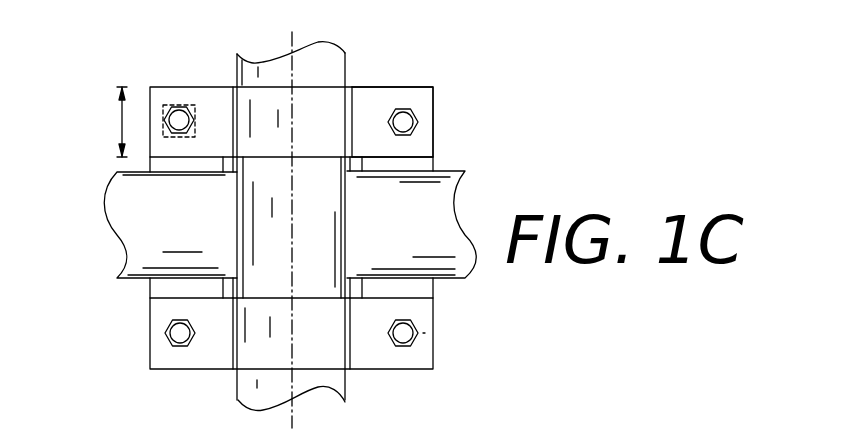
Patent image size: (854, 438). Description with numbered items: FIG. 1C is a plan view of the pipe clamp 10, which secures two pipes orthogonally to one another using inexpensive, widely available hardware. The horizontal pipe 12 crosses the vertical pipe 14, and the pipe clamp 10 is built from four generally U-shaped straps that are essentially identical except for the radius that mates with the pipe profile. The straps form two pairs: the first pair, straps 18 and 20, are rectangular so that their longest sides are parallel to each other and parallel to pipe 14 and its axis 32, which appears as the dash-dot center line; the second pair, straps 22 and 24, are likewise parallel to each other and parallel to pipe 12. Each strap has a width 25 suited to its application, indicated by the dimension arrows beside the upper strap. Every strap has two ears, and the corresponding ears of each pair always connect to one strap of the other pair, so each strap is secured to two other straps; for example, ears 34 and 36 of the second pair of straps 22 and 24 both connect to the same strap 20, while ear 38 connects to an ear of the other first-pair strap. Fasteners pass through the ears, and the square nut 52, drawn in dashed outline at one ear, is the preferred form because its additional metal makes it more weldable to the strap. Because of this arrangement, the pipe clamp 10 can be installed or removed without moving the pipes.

The pipe clamp 10 is at (547, 117).
The pipe 12 is at (148, 230).
The pipe 14 is at (265, 262).
The strap 18 is at (167, 287).
The strap 20 is at (403, 287).
The strap 22 is at (373, 350).
The strap 24 is at (421, 93).
The width 25 is at (122, 122).
The axis 32 is at (290, 352).
The ear 34 is at (421, 146).
The ear 36 is at (425, 335).
The ear 38 is at (163, 362).
The square nut 52 is at (179, 103).